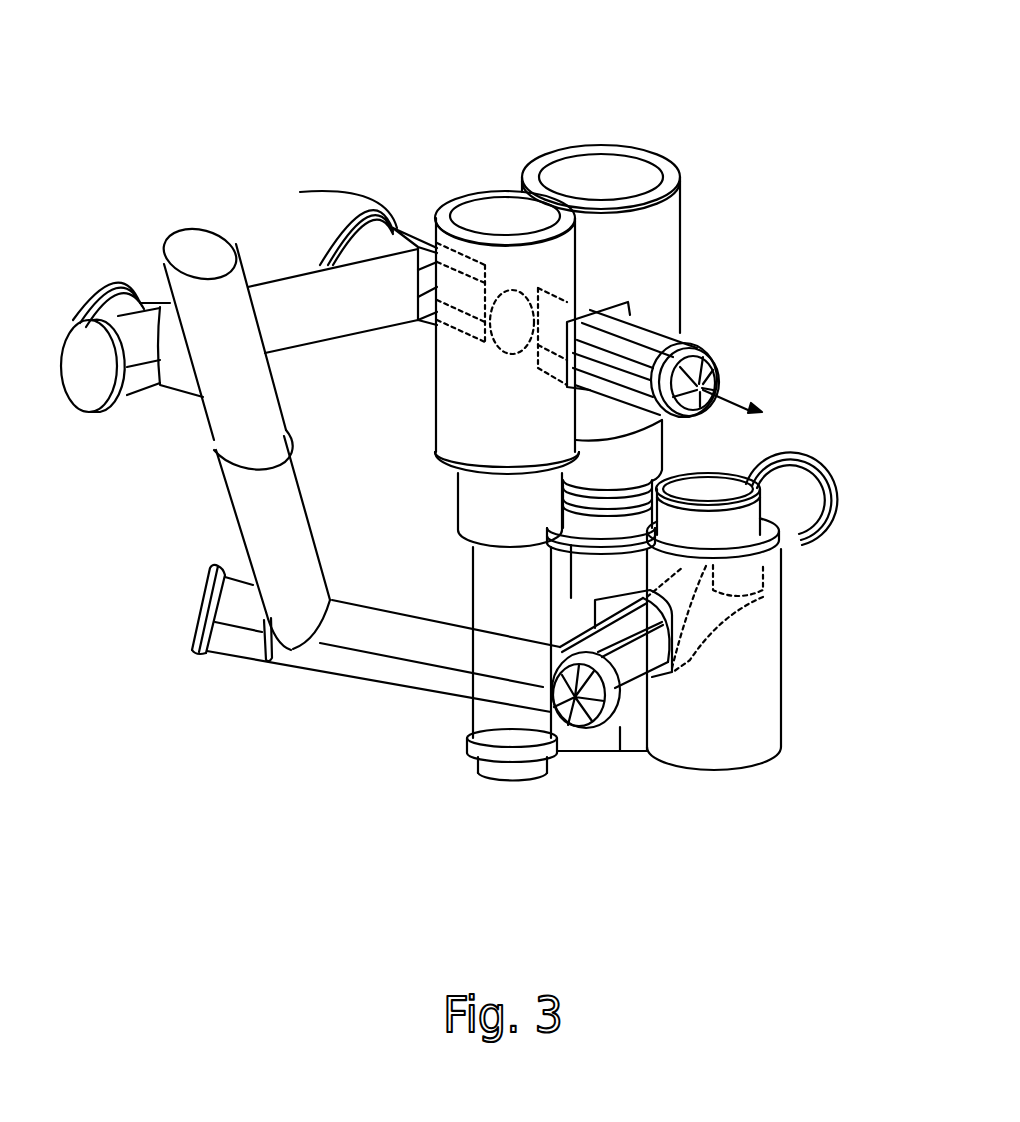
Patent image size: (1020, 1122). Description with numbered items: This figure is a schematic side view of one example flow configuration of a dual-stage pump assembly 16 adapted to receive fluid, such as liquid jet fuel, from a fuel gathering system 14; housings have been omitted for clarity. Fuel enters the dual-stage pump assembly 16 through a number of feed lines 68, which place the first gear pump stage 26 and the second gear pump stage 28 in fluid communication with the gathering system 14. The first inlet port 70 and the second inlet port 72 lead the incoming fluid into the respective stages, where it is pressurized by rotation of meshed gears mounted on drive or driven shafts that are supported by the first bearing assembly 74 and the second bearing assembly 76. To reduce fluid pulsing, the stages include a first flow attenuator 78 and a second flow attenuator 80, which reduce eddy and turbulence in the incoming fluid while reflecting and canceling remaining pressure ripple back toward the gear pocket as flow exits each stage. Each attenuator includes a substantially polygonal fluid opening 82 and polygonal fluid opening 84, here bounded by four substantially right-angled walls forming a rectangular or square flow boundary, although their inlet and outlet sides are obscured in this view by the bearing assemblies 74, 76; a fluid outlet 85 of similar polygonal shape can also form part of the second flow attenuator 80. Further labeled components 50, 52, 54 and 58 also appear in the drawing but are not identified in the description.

The fuel gathering system 14 is at (146, 266).
The dual-stage pump assembly 16 is at (765, 136).
The first gear pump stage 26 is at (553, 870).
The second gear pump stage 28 is at (677, 72).
The base 50 is at (593, 768).
The reservoir cylinder 52 is at (786, 692).
The rear cylinder 54 is at (685, 278).
The inclined conduit 58 is at (408, 437).
The feed lines 68 is at (307, 303).
The first inlet port 70 is at (644, 700).
The second inlet port 72 is at (472, 252).
The first bearing assembly 74 is at (657, 772).
The second bearing assembly 76 is at (512, 166).
The first flow attenuator 78 is at (718, 630).
The second flow attenuator 80 is at (494, 372).
The polygonal fluid opening 82 is at (640, 592).
The polygonal fluid opening 84 is at (518, 355).
The fluid outlet 85 is at (630, 310).